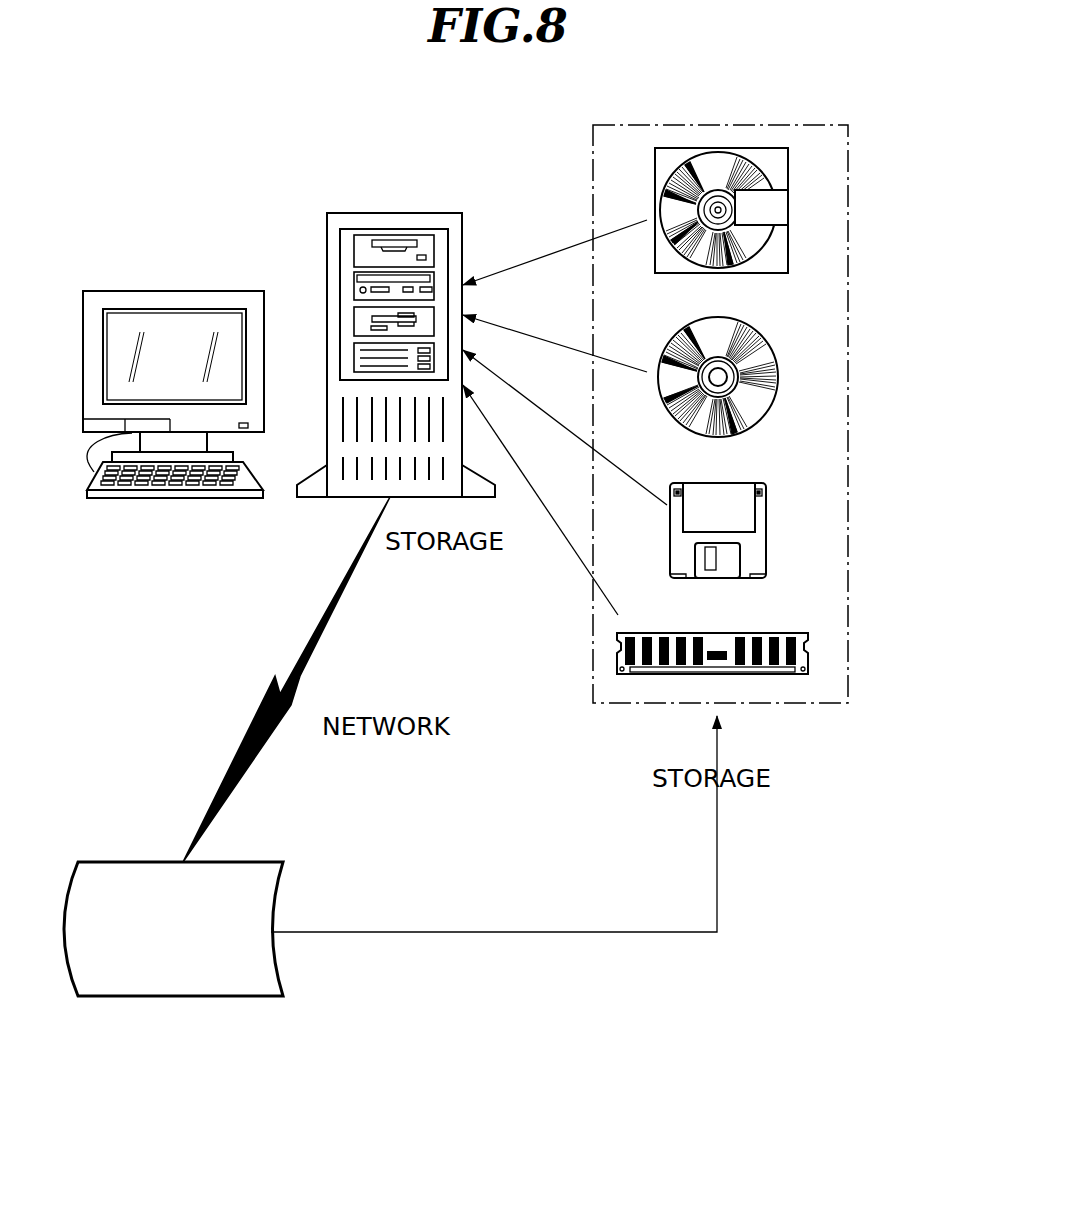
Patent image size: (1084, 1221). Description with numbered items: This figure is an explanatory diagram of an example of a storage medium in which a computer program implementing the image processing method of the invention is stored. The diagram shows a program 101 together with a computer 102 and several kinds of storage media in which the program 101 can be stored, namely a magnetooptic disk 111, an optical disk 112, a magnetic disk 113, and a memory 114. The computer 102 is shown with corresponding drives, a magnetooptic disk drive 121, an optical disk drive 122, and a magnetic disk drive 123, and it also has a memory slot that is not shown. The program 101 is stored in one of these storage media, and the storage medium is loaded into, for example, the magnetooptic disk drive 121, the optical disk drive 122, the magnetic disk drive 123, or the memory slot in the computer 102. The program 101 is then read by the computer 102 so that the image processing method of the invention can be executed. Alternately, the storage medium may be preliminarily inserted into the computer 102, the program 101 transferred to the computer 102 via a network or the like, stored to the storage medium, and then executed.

The program 101 is at (180, 990).
The computer 102 is at (378, 324).
The magnetooptic disk 111 is at (775, 173).
The optical disk 112 is at (778, 370).
The magnetic disk 113 is at (768, 530).
The memory 114 is at (810, 655).
The magnetooptic disk drive 121 is at (358, 253).
The optical disk drive 122 is at (358, 287).
The magnetic disk drive 123 is at (358, 323).